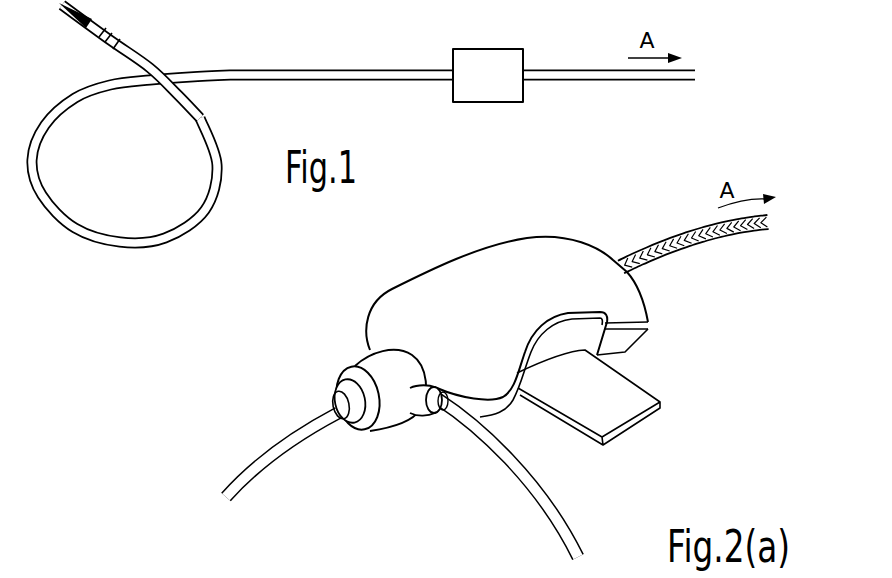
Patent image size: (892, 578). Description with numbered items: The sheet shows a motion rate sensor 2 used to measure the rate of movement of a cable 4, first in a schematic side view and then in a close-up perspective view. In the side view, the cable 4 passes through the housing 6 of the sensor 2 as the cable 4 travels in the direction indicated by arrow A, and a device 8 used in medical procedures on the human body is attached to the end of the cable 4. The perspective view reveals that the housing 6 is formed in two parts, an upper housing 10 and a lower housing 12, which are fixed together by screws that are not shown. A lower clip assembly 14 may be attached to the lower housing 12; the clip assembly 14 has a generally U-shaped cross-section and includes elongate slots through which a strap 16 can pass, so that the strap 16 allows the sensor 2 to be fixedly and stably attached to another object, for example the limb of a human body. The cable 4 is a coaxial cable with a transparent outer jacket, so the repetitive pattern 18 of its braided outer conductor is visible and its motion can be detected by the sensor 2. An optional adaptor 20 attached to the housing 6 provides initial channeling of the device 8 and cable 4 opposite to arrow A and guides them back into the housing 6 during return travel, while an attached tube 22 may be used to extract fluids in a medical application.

In FIG. 1, the motion rate sensor 2 is at (489, 80).
In FIG. 2A, the motion rate sensor 2 is at (487, 330).
In FIG. 1, the cable 4 is at (323, 68).
In FIG. 2A, the cable 4 is at (642, 252).
In FIG. 1, the housing 6 is at (497, 90).
In FIG. 2A, the housing 6 is at (417, 285).
In FIG. 1, the device 8 is at (100, 31).
In FIG. 2A, the upper housing 10 is at (634, 296).
In FIG. 2A, the lower housing 12 is at (590, 343).
In FIG. 2A, the lower clip assembly 14 is at (612, 356).
In FIG. 2A, the strap 16 is at (622, 410).
In FIG. 2A, the pattern 18 is at (706, 240).
In FIG. 2A, the adaptor 20 is at (307, 447).
In FIG. 2A, the tube 22 is at (507, 468).